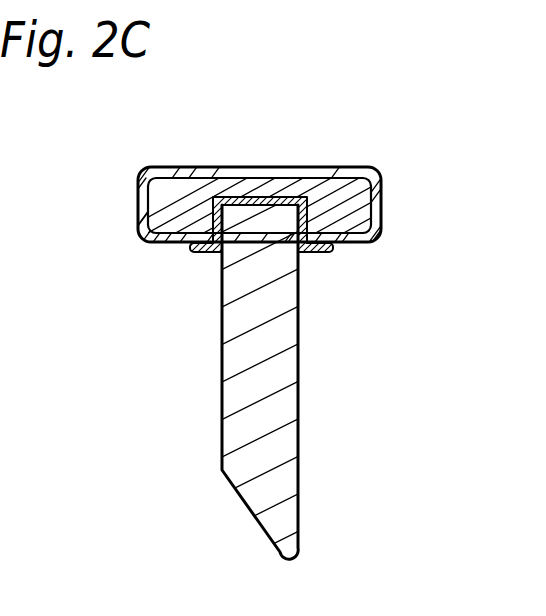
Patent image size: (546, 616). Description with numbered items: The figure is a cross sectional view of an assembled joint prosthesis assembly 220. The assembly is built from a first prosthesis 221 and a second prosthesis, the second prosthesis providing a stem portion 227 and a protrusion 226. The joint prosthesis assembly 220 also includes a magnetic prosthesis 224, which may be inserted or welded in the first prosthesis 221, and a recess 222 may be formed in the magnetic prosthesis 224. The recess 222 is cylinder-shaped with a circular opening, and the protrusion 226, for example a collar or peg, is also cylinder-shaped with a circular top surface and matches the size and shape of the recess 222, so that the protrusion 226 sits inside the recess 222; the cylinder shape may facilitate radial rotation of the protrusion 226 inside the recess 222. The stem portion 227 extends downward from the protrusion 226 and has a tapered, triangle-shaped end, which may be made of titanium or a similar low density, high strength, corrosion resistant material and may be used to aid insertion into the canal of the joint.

The joint prosthesis assembly 220 is at (172, 418).
The first prosthesis 221 is at (330, 145).
The recess 222 is at (307, 208).
The magnetic prosthesis 224 is at (192, 188).
The protrusion 226 is at (212, 224).
The stem portion 227 is at (298, 400).